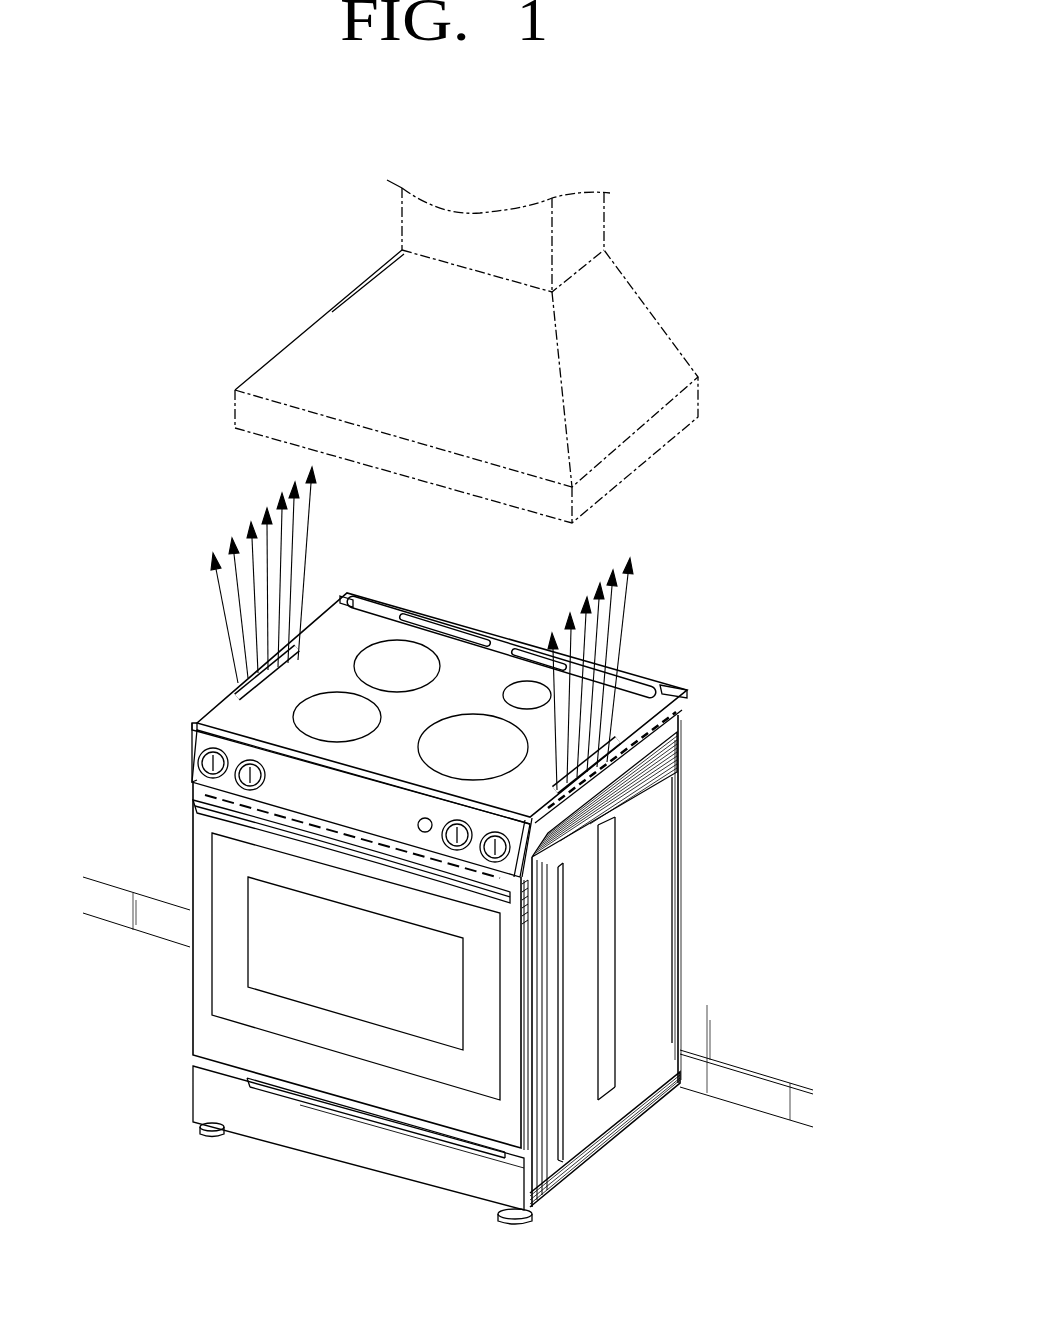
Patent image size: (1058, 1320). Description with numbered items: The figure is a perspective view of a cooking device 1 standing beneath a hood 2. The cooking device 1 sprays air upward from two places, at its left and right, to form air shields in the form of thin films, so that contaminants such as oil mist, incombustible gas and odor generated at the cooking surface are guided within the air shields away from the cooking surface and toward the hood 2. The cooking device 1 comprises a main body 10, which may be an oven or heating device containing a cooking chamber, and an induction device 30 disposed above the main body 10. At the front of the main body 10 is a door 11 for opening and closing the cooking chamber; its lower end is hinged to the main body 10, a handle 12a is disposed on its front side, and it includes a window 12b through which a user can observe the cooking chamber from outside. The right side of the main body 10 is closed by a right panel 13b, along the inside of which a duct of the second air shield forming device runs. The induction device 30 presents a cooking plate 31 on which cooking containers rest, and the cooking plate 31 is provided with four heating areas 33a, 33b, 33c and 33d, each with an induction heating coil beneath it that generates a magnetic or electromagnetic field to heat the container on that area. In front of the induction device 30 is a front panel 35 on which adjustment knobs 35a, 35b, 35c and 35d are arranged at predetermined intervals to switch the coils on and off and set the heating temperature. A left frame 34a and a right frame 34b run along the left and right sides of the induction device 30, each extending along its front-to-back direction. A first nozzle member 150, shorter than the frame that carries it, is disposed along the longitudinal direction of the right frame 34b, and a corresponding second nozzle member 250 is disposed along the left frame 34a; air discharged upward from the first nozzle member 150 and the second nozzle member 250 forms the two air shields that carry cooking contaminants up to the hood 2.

The cooking device 1 is at (679, 622).
The hood 2 is at (333, 302).
The main body 10 is at (699, 910).
The door 11 is at (295, 1067).
The handle 12a is at (435, 888).
The window 12b is at (368, 1002).
The right panel 13b is at (658, 963).
The induction device 30 is at (177, 695).
The cooking plate 31 is at (448, 650).
The heating area 33a is at (463, 740).
The heating area 33b is at (517, 692).
The heating area 33c is at (325, 705).
The heating area 33d is at (393, 657).
The left frame 34a is at (210, 717).
The right frame 34b is at (673, 693).
The front panel 35 is at (427, 804).
The adjustment knob 35a is at (497, 846).
The adjustment knob 35b is at (472, 833).
The adjustment knob 35c is at (235, 776).
The adjustment knob 35d is at (198, 762).
The first nozzle member 150 is at (641, 745).
The second nozzle member 250 is at (235, 666).